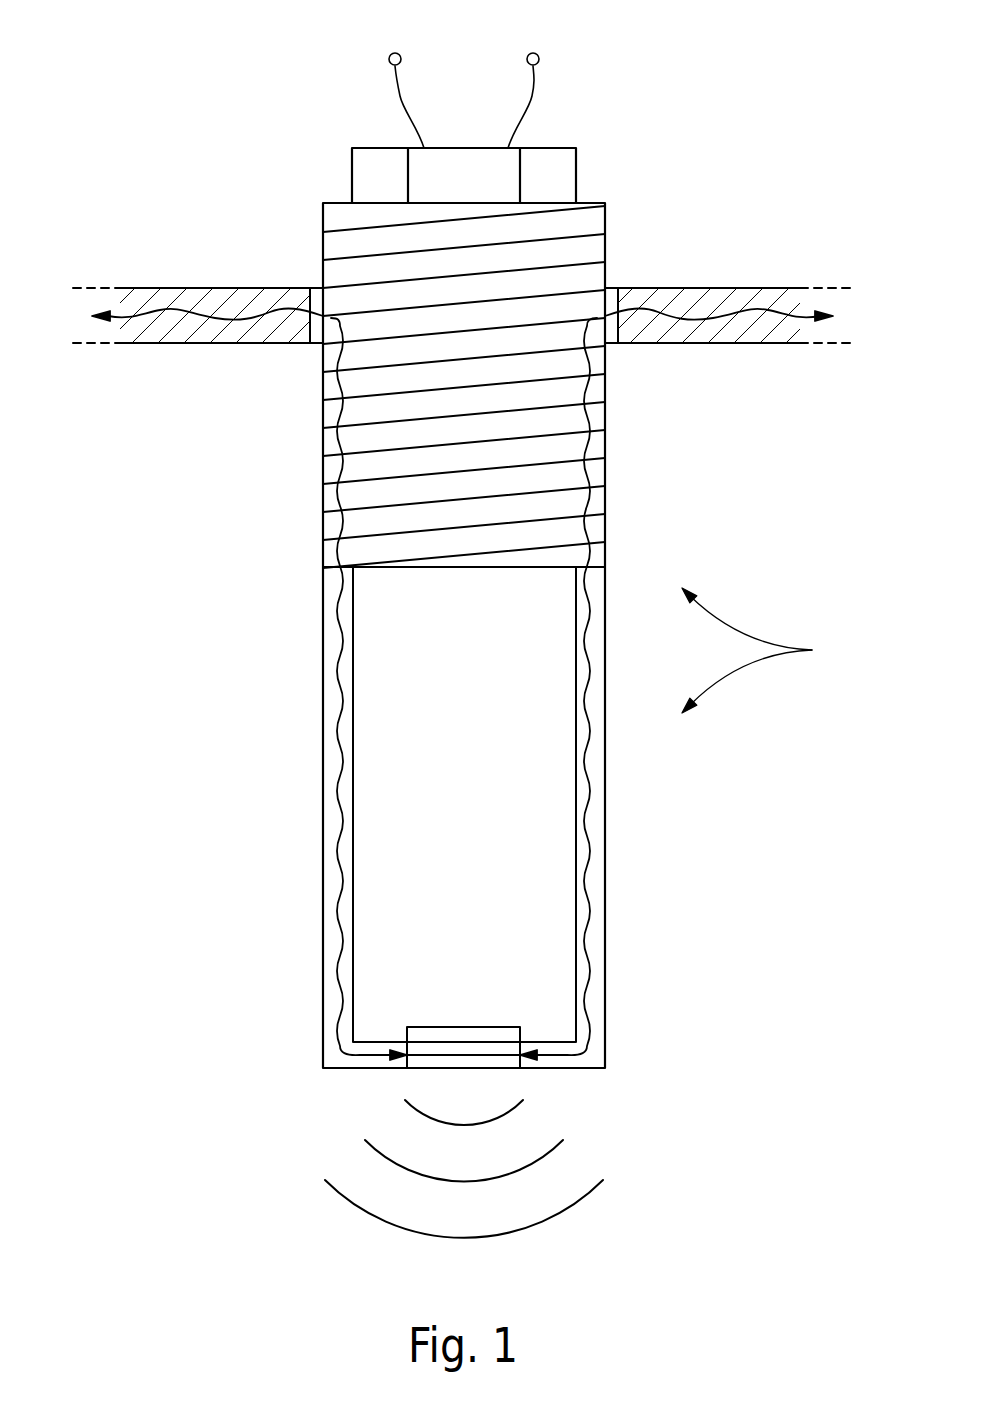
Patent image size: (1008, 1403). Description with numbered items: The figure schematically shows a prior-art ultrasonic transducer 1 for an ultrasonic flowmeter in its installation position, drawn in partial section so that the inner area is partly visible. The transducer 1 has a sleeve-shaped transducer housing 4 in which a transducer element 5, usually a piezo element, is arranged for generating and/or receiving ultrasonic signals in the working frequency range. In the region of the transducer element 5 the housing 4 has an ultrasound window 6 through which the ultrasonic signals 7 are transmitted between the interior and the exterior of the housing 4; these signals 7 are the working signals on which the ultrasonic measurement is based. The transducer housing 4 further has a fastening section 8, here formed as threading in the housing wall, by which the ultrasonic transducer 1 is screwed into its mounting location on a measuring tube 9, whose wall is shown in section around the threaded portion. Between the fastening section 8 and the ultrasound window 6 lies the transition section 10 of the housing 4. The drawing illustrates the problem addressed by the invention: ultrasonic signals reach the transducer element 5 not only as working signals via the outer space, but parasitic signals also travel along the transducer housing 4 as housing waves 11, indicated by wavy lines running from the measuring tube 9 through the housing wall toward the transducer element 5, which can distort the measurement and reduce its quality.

The ultrasonic transducer 1 is at (770, 65).
The transducer housing 4 is at (758, 650).
The transducer element 5 is at (463, 1047).
The ultrasound window 6 is at (493, 1063).
The ultrasonic signals 7 is at (570, 1210).
The fastening section 8 is at (632, 203).
The measuring tube 9 is at (180, 287).
The transition section 10 is at (290, 510).
The housing waves 11 is at (193, 320).